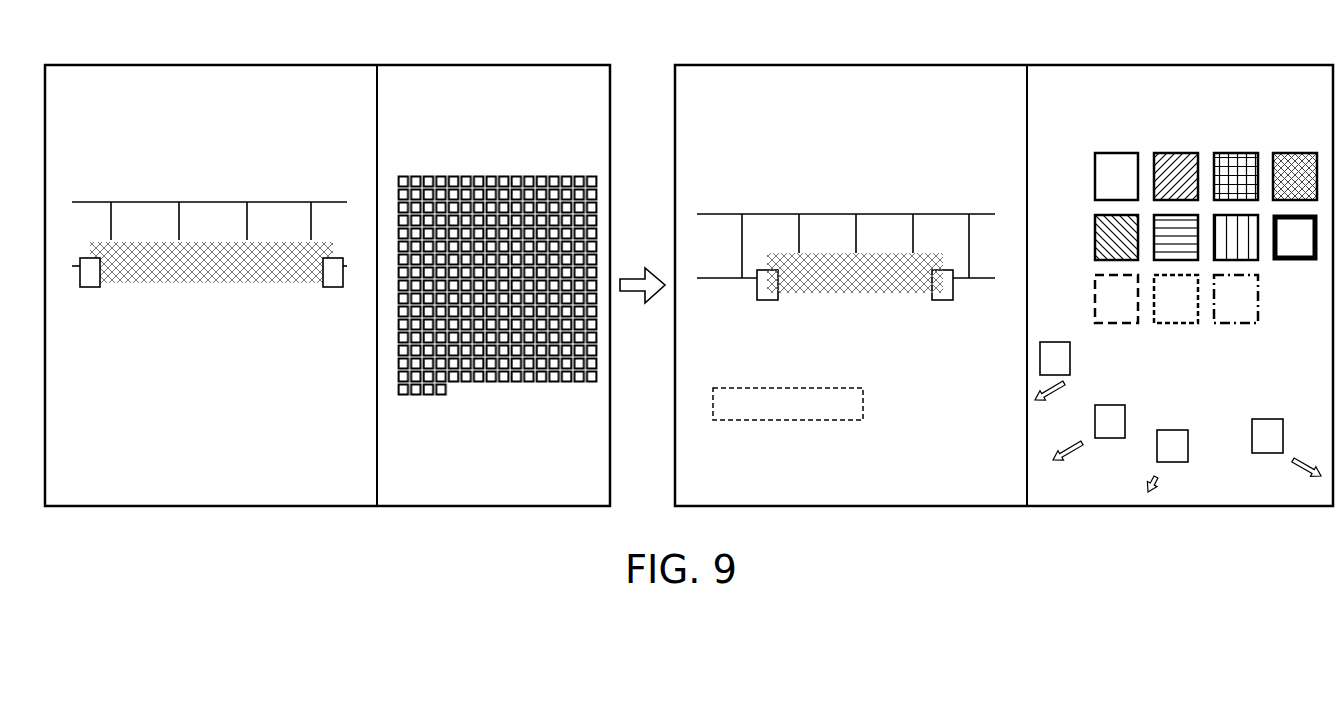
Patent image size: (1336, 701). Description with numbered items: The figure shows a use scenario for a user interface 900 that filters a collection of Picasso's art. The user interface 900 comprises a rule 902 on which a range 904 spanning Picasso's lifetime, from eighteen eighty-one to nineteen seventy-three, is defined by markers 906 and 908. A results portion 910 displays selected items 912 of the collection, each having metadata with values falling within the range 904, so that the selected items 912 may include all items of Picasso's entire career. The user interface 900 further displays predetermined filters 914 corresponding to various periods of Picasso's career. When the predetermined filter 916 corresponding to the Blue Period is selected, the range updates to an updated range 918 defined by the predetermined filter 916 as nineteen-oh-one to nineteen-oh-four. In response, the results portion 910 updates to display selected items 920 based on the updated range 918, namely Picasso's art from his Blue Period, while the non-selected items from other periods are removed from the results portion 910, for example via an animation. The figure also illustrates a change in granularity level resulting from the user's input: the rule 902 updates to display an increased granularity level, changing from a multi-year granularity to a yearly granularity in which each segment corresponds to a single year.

The user interface 900 is at (332, 65).
The rule 902 is at (290, 190).
The range 904 is at (184, 262).
The marker 906 is at (87, 287).
The marker 908 is at (333, 288).
The results portion 910 is at (490, 75).
The selected items 912 is at (443, 165).
The predetermined filters 914 is at (232, 408).
The predetermined filter 916 is at (866, 405).
The updated range 918 is at (855, 278).
The selected items 920 is at (1150, 130).